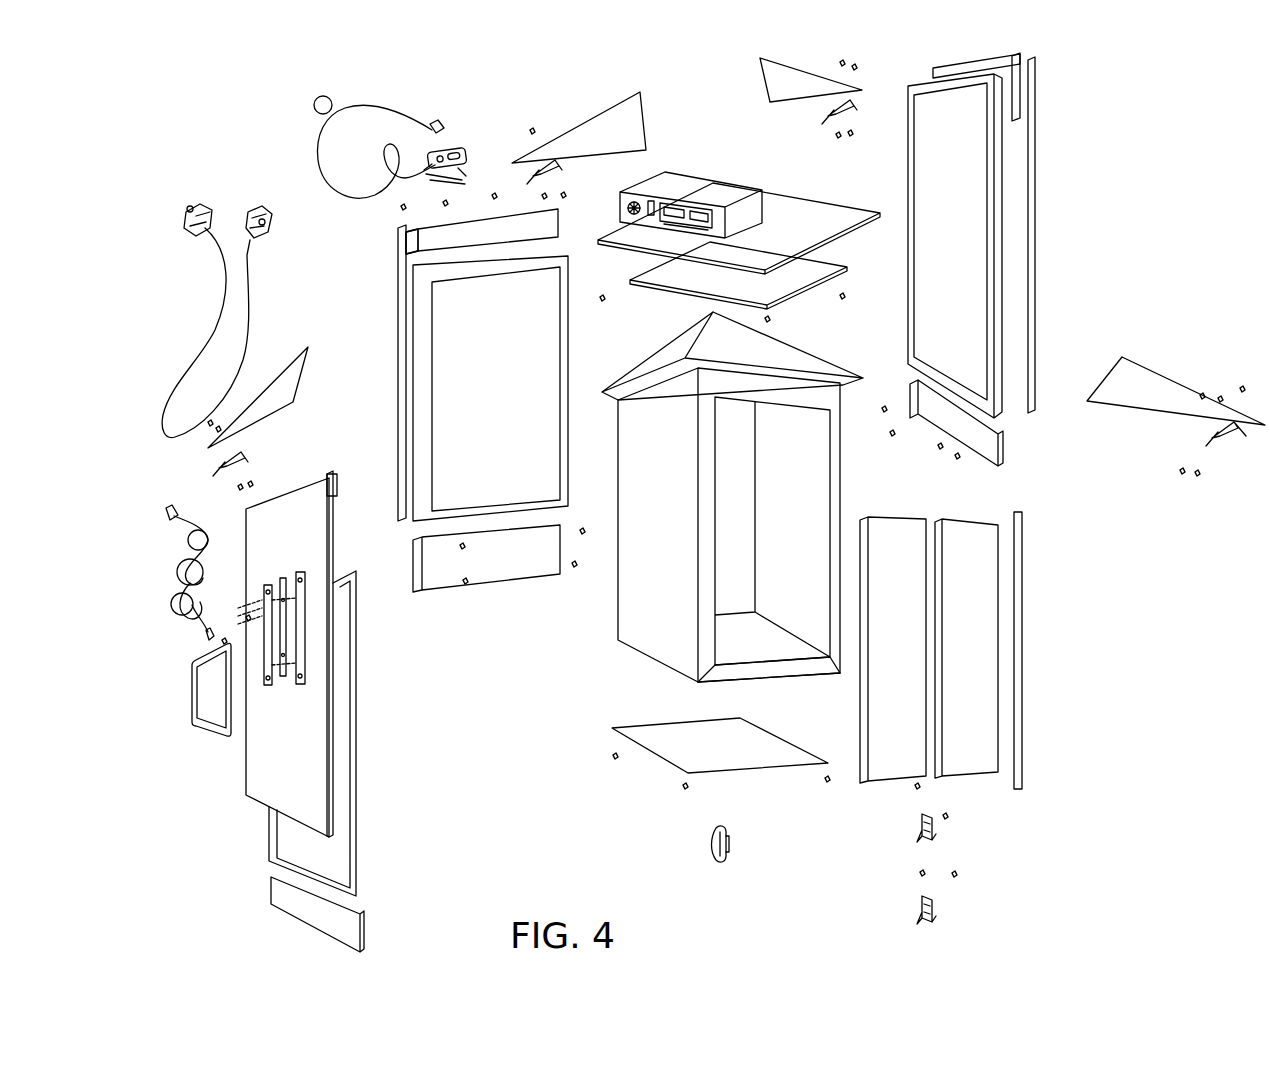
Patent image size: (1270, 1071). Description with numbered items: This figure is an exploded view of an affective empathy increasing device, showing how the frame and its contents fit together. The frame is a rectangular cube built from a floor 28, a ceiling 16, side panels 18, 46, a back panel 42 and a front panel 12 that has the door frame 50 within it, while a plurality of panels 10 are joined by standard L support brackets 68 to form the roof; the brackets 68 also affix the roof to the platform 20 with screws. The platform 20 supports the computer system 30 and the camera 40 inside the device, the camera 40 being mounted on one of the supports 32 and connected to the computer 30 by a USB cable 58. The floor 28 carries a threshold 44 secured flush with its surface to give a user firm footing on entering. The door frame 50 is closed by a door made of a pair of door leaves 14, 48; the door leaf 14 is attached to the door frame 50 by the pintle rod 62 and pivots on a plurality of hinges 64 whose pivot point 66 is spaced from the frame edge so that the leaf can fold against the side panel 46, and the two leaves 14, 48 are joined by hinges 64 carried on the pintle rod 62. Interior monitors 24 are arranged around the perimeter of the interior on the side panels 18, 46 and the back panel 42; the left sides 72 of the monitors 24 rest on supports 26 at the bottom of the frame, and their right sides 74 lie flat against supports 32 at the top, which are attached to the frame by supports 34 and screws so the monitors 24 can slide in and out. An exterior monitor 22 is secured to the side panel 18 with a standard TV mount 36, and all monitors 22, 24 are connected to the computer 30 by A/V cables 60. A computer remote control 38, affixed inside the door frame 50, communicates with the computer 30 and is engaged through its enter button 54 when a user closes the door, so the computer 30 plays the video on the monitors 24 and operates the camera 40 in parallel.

The panels 10 is at (283, 383).
The front panel 12 is at (705, 582).
The door leaf 14 is at (989, 630).
The ceiling 16 is at (790, 285).
The side panel 18 is at (307, 813).
The platform 20 is at (798, 197).
The monitor 22 is at (204, 728).
The monitors 24 is at (418, 361).
The supports 26 is at (506, 582).
The floor 28 is at (668, 760).
The computer system 30 is at (672, 190).
The supports 32 is at (405, 248).
The supports 34 is at (413, 237).
The TV mount 36 is at (305, 648).
The computer remote control 38 is at (714, 845).
The camera 40 is at (452, 150).
The back panel 42 is at (401, 293).
The threshold 44 is at (735, 677).
The side panel 46 is at (1037, 302).
The door leaf 48 is at (893, 512).
The door frame 50 is at (790, 660).
The enter button 54 is at (730, 844).
The USB cable 58 is at (322, 138).
The A/V cables 60 is at (240, 250).
The pintle rod 62 is at (1022, 732).
The hinges 64 is at (934, 912).
The pivot point 66 is at (920, 898).
The L support brackets 68 is at (240, 458).
The left sides 72 is at (520, 488).
The right sides 74 is at (495, 274).